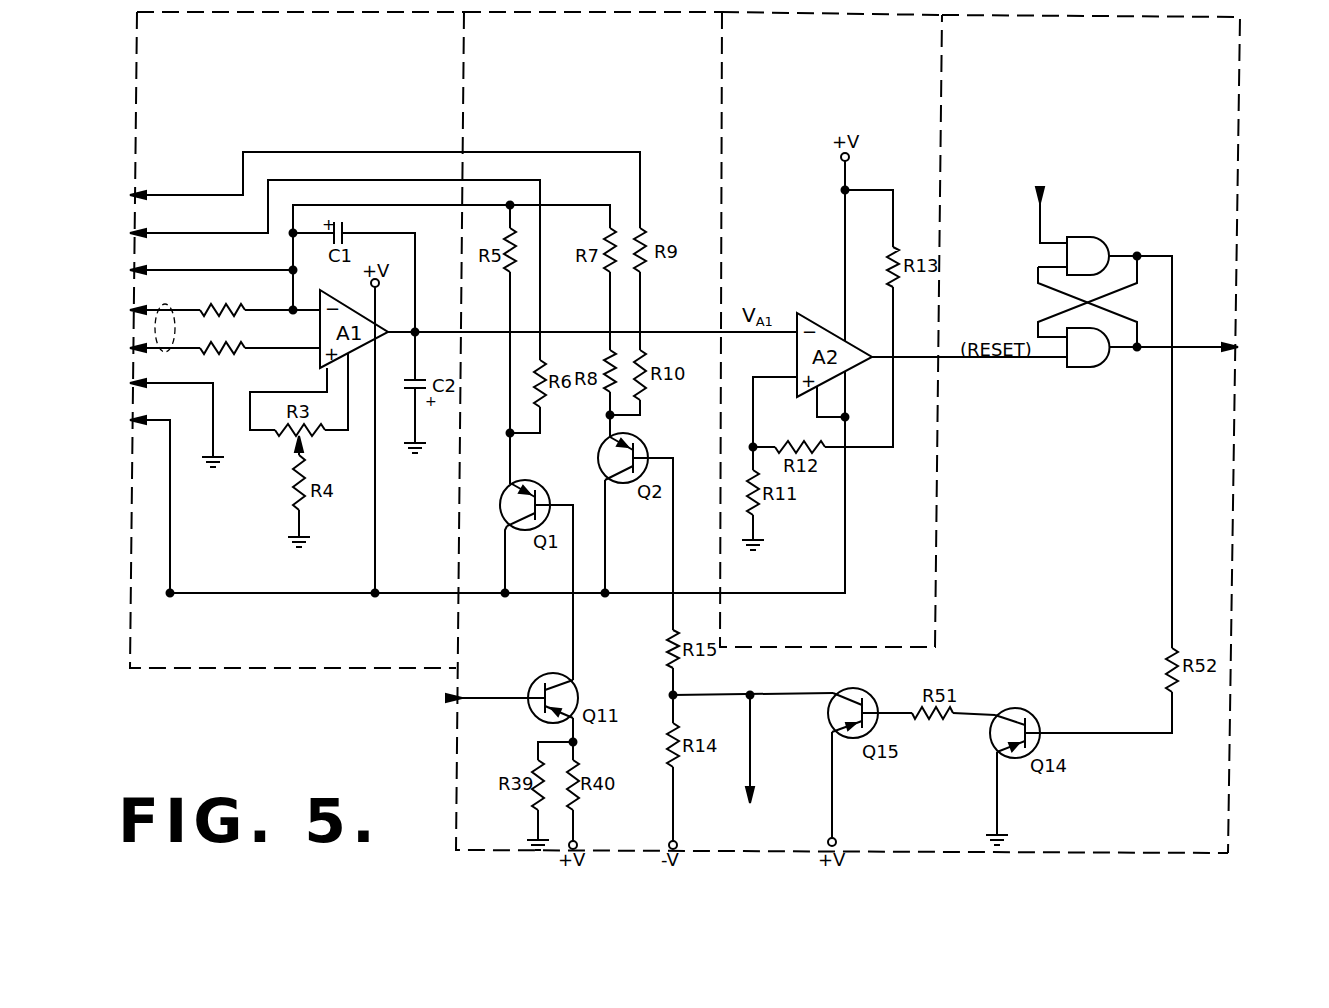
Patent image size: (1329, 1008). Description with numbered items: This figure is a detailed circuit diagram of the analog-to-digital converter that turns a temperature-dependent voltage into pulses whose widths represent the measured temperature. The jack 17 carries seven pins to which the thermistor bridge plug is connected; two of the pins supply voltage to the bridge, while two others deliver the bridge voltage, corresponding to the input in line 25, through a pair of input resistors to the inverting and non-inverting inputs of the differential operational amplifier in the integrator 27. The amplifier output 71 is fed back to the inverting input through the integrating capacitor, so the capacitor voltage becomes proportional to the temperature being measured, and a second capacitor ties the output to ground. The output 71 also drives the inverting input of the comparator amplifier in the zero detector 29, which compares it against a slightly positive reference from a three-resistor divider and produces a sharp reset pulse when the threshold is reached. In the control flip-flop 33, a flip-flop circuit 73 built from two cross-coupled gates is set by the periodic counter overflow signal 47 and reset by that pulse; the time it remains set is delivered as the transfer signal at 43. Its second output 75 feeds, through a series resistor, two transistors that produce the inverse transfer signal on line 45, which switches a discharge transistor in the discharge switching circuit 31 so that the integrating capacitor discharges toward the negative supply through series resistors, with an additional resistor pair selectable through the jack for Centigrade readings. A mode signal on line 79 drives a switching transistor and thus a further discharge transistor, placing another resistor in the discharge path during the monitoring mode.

The jack 17 is at (70, 322).
The line 25 is at (168, 306).
The integrator 27 is at (308, 107).
The zero detector 29 is at (843, 110).
The discharge switching circuit 31 is at (601, 113).
The control flip-flop 33 is at (1108, 117).
The transfer signal voltage output 43 is at (1203, 347).
The line 45 is at (753, 786).
The counter overflow signal 47 is at (1038, 214).
The output of amplifier A1 71 is at (405, 330).
The flip-flop circuit 73 is at (1112, 236).
The second output of the flip-flop circuit 75 is at (1175, 272).
The line 79 is at (472, 702).